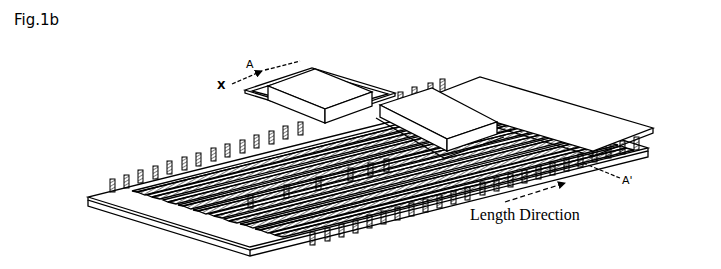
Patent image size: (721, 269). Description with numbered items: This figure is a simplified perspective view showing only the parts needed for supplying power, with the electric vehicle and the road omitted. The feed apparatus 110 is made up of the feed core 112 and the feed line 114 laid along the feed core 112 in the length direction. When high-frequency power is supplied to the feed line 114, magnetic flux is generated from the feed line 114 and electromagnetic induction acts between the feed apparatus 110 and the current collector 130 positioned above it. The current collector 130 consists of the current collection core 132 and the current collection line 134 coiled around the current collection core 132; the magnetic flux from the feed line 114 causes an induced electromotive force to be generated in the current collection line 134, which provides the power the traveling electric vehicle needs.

The feed apparatus 110 is at (335, 177).
The feed core 112 is at (112, 212).
The feed line 114 is at (100, 192).
The current collector 130 is at (374, 98).
The current collection core 132 is at (322, 78).
The current collection line 134 is at (418, 96).